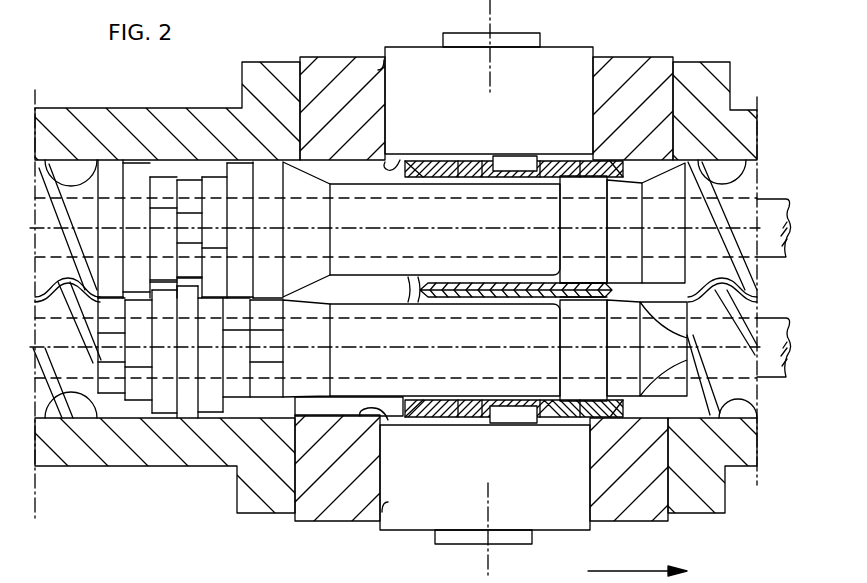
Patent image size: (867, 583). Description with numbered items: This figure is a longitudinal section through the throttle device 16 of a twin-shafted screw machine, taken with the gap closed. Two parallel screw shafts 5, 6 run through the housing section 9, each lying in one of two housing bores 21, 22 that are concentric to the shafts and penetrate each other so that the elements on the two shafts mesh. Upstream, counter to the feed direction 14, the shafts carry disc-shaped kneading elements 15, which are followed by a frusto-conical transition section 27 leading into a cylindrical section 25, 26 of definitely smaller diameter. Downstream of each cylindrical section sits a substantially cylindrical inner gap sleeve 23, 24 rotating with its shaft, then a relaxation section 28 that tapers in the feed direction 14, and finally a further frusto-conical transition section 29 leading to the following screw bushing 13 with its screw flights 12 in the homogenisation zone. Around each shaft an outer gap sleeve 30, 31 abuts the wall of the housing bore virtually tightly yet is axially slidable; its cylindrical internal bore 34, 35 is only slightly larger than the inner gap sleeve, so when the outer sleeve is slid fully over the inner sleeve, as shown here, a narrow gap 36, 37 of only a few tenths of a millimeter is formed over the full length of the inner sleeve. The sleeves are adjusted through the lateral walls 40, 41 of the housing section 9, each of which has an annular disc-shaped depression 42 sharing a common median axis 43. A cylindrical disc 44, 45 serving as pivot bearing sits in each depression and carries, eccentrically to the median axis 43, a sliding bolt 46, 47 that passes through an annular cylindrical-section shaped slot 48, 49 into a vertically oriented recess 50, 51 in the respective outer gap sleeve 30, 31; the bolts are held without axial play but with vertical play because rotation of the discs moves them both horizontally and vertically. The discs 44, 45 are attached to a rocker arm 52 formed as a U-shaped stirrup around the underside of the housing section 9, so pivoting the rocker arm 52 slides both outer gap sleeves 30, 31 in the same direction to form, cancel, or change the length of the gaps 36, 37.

The screw shaft 5 is at (770, 197).
The screw shaft 6 is at (770, 378).
The housing section 9 is at (632, 62).
The screw flights 12 is at (47, 165).
The screw bushing 13 is at (77, 182).
The feed direction 14 is at (637, 561).
The kneading elements 15 is at (212, 403).
The throttle device 16 is at (310, 52).
The housing bore 21 is at (393, 157).
The housing bore 22 is at (388, 426).
The inner gap sleeve 23 is at (583, 229).
The inner gap sleeve 24 is at (583, 350).
The cylindrical section 25 is at (445, 229).
The cylindrical section 26 is at (445, 350).
The frusto-conical transition section 27 is at (335, 352).
The relaxation section 28 is at (624, 288).
The frusto-conical transition section 29 is at (663, 279).
The outer gap sleeve 30 is at (462, 170).
The outer gap sleeve 31 is at (463, 423).
The cylindrical internal bore 34 is at (447, 172).
The cylindrical internal bore 35 is at (440, 420).
The gap 36 is at (578, 168).
The gap 37 is at (577, 420).
The lateral wall 40 is at (344, 67).
The lateral wall 41 is at (338, 508).
The depression 42 is at (380, 67).
The median axis 43 is at (489, 13).
The cylindrical disc 44 is at (411, 60).
The cylindrical disc 45 is at (407, 508).
The sliding bolt 46 is at (516, 165).
The sliding bolt 47 is at (516, 417).
The slot 48 is at (479, 157).
The slot 49 is at (480, 425).
The recess 50 is at (516, 165).
The recess 51 is at (512, 400).
The rocker arm 52 is at (530, 40).